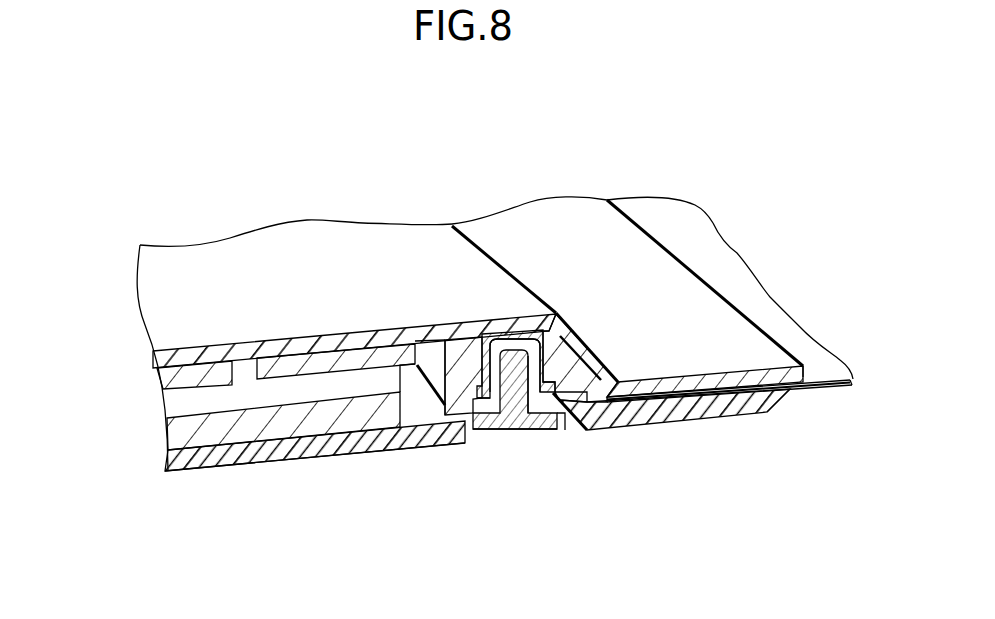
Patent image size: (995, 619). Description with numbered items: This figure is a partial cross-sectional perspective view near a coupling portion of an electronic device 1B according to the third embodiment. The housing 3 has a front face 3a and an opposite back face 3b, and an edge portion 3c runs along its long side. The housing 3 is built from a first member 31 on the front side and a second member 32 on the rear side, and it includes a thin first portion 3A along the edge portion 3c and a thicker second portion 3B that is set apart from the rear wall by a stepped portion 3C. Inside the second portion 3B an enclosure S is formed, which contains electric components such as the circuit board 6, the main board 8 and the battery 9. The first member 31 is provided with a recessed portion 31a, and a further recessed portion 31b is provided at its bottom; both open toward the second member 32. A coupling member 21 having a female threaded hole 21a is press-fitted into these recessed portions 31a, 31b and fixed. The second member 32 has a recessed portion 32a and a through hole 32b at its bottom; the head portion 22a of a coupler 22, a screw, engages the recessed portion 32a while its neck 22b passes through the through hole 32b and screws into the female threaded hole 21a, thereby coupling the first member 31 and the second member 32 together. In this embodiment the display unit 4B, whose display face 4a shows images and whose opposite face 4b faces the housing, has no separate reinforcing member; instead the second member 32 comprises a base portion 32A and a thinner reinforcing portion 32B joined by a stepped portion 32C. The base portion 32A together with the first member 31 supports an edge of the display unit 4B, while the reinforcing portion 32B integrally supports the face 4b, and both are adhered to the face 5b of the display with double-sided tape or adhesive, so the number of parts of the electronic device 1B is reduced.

The electronic device 1B is at (589, 155).
The housing 3 is at (268, 221).
The second portion 3B is at (327, 260).
The first portion 3A is at (538, 233).
The stepped portion 3C is at (579, 323).
The face 3a is at (260, 320).
The face 3b is at (266, 464).
The edge portion 3c is at (672, 250).
The face 4a is at (660, 224).
The face 4b is at (860, 392).
The display unit 4B is at (726, 249).
The face 5b is at (838, 389).
The circuit board 6 is at (316, 382).
The main board 8 is at (165, 378).
The battery 9 is at (178, 437).
The first member 31 is at (236, 282).
The recessed portion 31a is at (478, 352).
The recessed portion 31b is at (527, 336).
The second member 32 is at (349, 460).
The recessed portion 32a is at (551, 413).
The through hole 32b is at (540, 415).
The base portion 32A is at (710, 424).
The reinforcing portion 32B is at (817, 400).
The stepped portion 32C is at (781, 407).
The coupling member 21 is at (497, 336).
The female threaded hole 21a is at (489, 385).
The coupler 22 is at (529, 435).
The head portion 22a is at (507, 422).
The neck 22b is at (520, 362).
The enclosure S is at (423, 416).